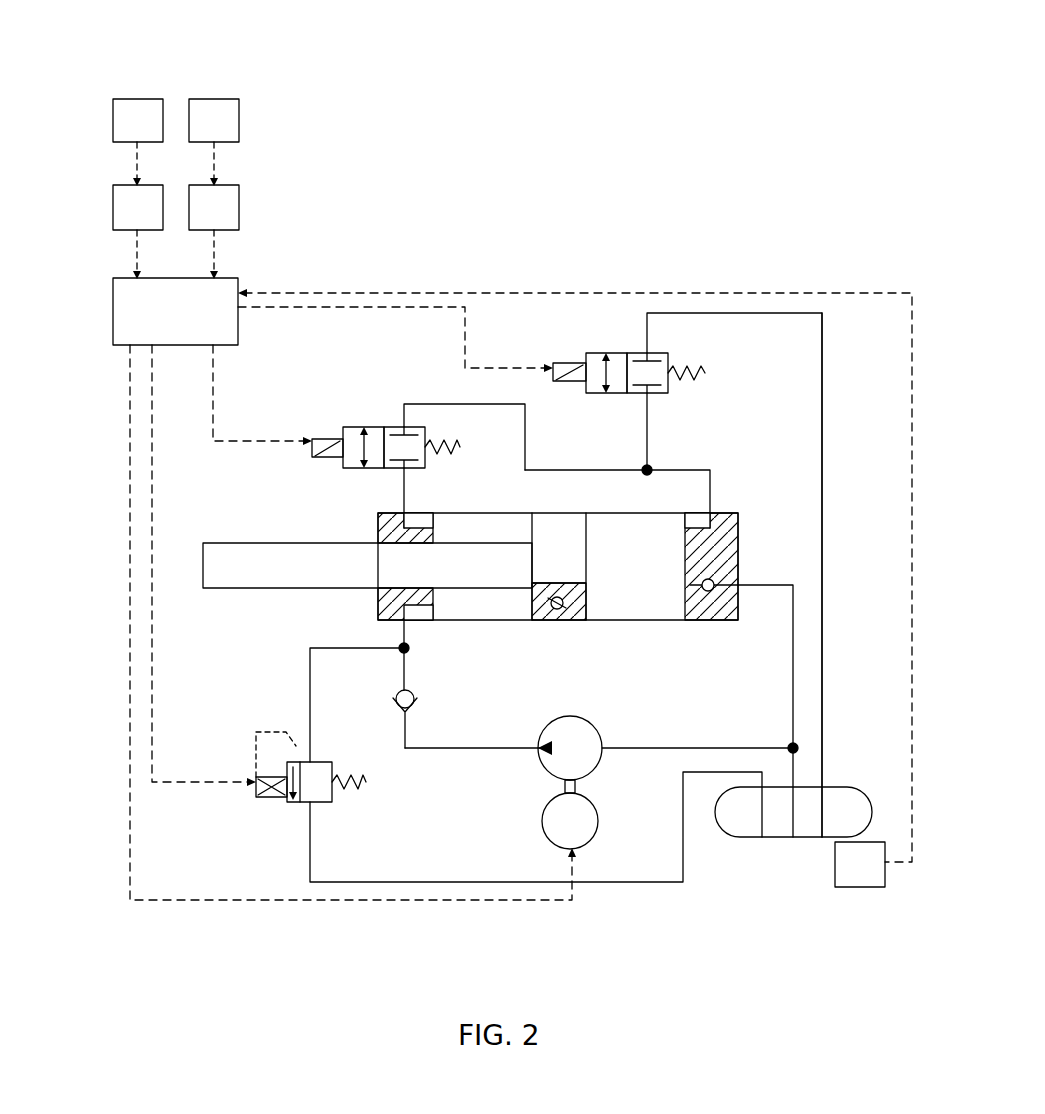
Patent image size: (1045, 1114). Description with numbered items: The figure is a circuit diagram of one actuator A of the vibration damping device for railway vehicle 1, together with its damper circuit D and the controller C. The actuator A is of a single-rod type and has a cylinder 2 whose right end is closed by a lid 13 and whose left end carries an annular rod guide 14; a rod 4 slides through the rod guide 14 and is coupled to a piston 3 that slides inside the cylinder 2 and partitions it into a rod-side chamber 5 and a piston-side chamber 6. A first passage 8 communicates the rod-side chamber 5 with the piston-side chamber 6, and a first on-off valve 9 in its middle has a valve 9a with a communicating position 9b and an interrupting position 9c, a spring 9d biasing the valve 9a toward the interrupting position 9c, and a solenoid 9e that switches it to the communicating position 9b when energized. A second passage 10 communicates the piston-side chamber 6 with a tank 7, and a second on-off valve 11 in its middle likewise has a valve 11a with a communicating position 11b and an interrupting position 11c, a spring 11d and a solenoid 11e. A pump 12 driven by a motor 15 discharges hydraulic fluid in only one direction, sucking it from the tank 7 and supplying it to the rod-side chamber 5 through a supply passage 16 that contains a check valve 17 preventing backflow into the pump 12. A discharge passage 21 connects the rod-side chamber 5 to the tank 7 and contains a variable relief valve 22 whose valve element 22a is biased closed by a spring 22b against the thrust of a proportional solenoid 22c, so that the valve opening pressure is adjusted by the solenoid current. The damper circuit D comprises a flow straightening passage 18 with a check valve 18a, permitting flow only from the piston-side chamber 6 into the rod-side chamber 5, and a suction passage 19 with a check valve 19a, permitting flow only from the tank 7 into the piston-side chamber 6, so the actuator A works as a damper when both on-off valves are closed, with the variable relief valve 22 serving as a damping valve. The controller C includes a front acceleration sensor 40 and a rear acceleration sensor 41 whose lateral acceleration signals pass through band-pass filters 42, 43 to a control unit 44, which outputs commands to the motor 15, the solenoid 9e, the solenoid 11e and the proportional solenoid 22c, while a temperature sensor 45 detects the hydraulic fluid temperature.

The vibration damping device for railway vehicle 1 is at (85, 68).
The cylinder 2 is at (553, 602).
The piston 3 is at (545, 605).
The rod 4 is at (242, 588).
The rod-side chamber 5 is at (481, 540).
The piston-side chamber 6 is at (633, 575).
The tank 7 is at (845, 787).
The first passage 8 is at (440, 404).
The first on-off valve 9 is at (388, 450).
The valve 9a is at (343, 430).
The communicating position 9b is at (362, 427).
The interrupting position 9c is at (415, 470).
The spring 9d is at (460, 447).
The solenoid 9e is at (312, 448).
The second passage 10 is at (822, 520).
The second on-off valve 11 is at (642, 361).
The valve 11a is at (590, 393).
The communicating position 11b is at (612, 353).
The interrupting position 11c is at (660, 393).
The spring 11d is at (700, 372).
The solenoid 11e is at (566, 363).
The pump 12 is at (600, 730).
The lid 13 is at (738, 528).
The rod guide 14 is at (378, 602).
The motor 15 is at (542, 825).
The supply passage 16 is at (404, 680).
The check valve 17 is at (414, 705).
The flow straightening passage 18 is at (581, 622).
The check valve 18a is at (562, 625).
The suction passage 19 is at (793, 672).
The check valve 19a is at (705, 600).
The discharge passage 21 is at (378, 882).
The variable relief valve 22 is at (308, 796).
The valve element 22a is at (292, 806).
The spring 22b is at (366, 782).
The proportional solenoid 22c is at (258, 790).
The front acceleration sensor 40 is at (113, 118).
The rear acceleration sensor 41 is at (239, 115).
The band-pass filter 42 is at (113, 200).
The band-pass filter 43 is at (239, 200).
The control unit 44 is at (238, 288).
The temperature sensor 45 is at (835, 880).
The actuator A is at (818, 278).
The controller C is at (312, 148).
The damper circuit D is at (793, 605).